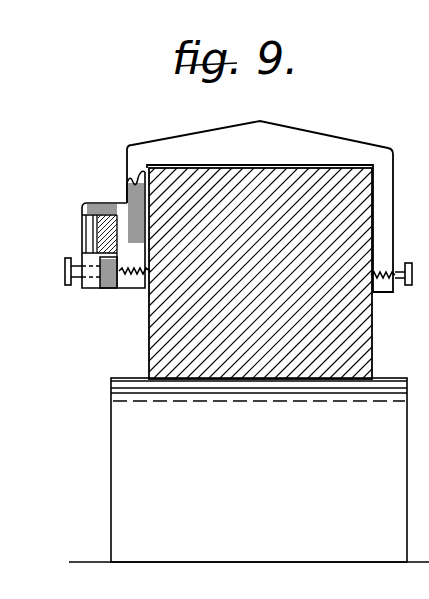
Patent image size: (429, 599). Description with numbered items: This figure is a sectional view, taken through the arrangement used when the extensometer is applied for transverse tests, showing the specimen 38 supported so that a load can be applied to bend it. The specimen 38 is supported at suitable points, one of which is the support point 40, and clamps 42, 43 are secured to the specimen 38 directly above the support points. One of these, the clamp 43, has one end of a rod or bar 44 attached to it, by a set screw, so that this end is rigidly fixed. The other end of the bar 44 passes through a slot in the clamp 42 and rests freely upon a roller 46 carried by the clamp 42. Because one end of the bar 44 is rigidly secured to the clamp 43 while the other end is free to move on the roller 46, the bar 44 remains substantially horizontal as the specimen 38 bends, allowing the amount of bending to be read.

The specimen 38 is at (326, 188).
The support point 40 is at (252, 380).
The clamp 42 is at (137, 238).
The clamp 43 is at (192, 143).
The rod or bar 44 is at (96, 239).
The roller 46 is at (107, 290).